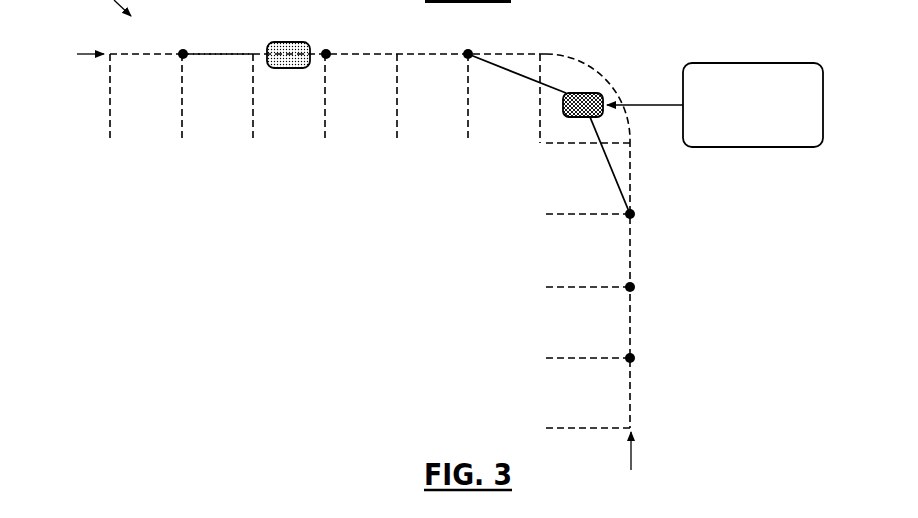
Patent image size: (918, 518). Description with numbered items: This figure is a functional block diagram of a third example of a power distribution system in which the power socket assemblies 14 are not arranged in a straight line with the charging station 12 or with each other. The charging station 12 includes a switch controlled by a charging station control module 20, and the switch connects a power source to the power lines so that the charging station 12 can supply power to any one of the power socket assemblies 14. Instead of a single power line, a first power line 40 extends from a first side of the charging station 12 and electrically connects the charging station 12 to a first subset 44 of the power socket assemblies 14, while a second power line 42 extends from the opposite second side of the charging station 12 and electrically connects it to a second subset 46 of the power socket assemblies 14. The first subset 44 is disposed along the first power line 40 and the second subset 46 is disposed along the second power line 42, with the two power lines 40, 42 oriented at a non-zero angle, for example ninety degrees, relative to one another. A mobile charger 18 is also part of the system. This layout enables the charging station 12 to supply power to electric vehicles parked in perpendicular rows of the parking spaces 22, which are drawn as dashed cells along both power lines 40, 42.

The charging station 12 is at (589, 92).
The power socket assemblies 14 is at (181, 51).
The mobile charger 18 is at (289, 52).
The charging station control module 20 is at (725, 63).
The parking spaces 22 is at (370, 241).
The first power line 40 is at (219, 53).
The second power line 42 is at (630, 254).
The first subset of the power socket assemblies 44 is at (78, 54).
The second subset of the power socket assemblies 46 is at (642, 456).